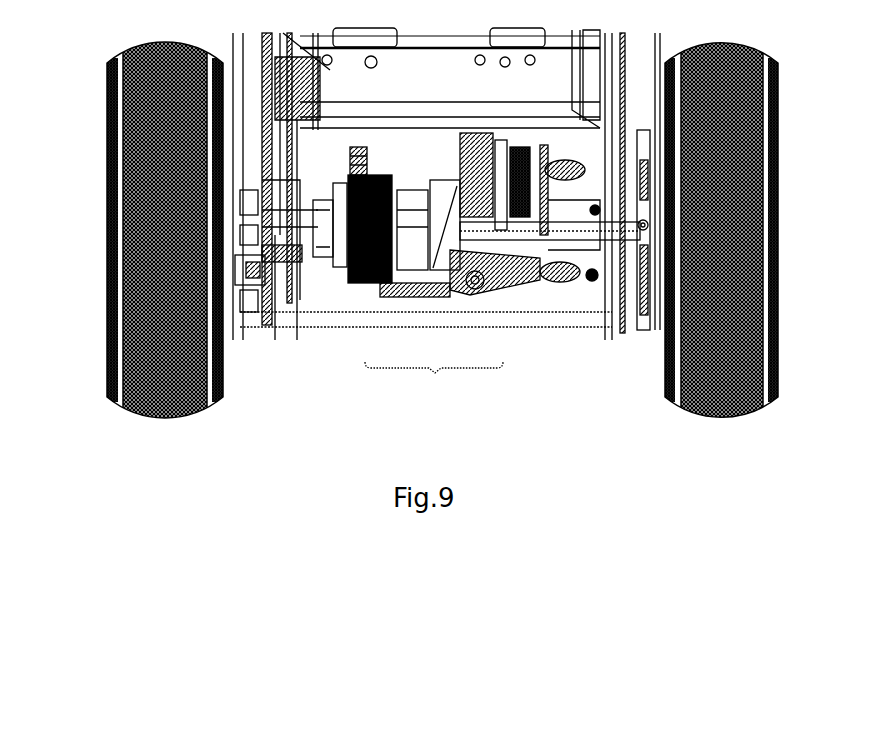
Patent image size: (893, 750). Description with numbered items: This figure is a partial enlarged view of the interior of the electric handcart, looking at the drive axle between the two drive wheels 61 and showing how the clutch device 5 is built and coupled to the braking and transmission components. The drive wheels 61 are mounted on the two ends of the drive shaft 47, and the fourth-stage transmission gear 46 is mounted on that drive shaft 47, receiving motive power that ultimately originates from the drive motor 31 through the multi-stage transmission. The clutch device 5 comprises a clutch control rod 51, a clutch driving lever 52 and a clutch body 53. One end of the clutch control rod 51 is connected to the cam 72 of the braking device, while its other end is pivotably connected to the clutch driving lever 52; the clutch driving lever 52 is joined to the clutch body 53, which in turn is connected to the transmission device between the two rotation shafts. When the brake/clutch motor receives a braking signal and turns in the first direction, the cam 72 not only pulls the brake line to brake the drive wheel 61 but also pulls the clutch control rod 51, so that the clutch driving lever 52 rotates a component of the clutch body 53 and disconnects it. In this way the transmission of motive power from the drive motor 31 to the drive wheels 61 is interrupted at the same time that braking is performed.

The drive wheel 61 is at (120, 235).
The drive motor 31 is at (356, 157).
The drive shaft 47 is at (315, 275).
The fourth-stage transmission gear 46 is at (348, 287).
The clutch body 53 is at (410, 290).
The clutch driving lever 52 is at (458, 297).
The clutch control rod 51 is at (512, 268).
The cam 72 is at (567, 283).
The clutch device 5 is at (434, 383).